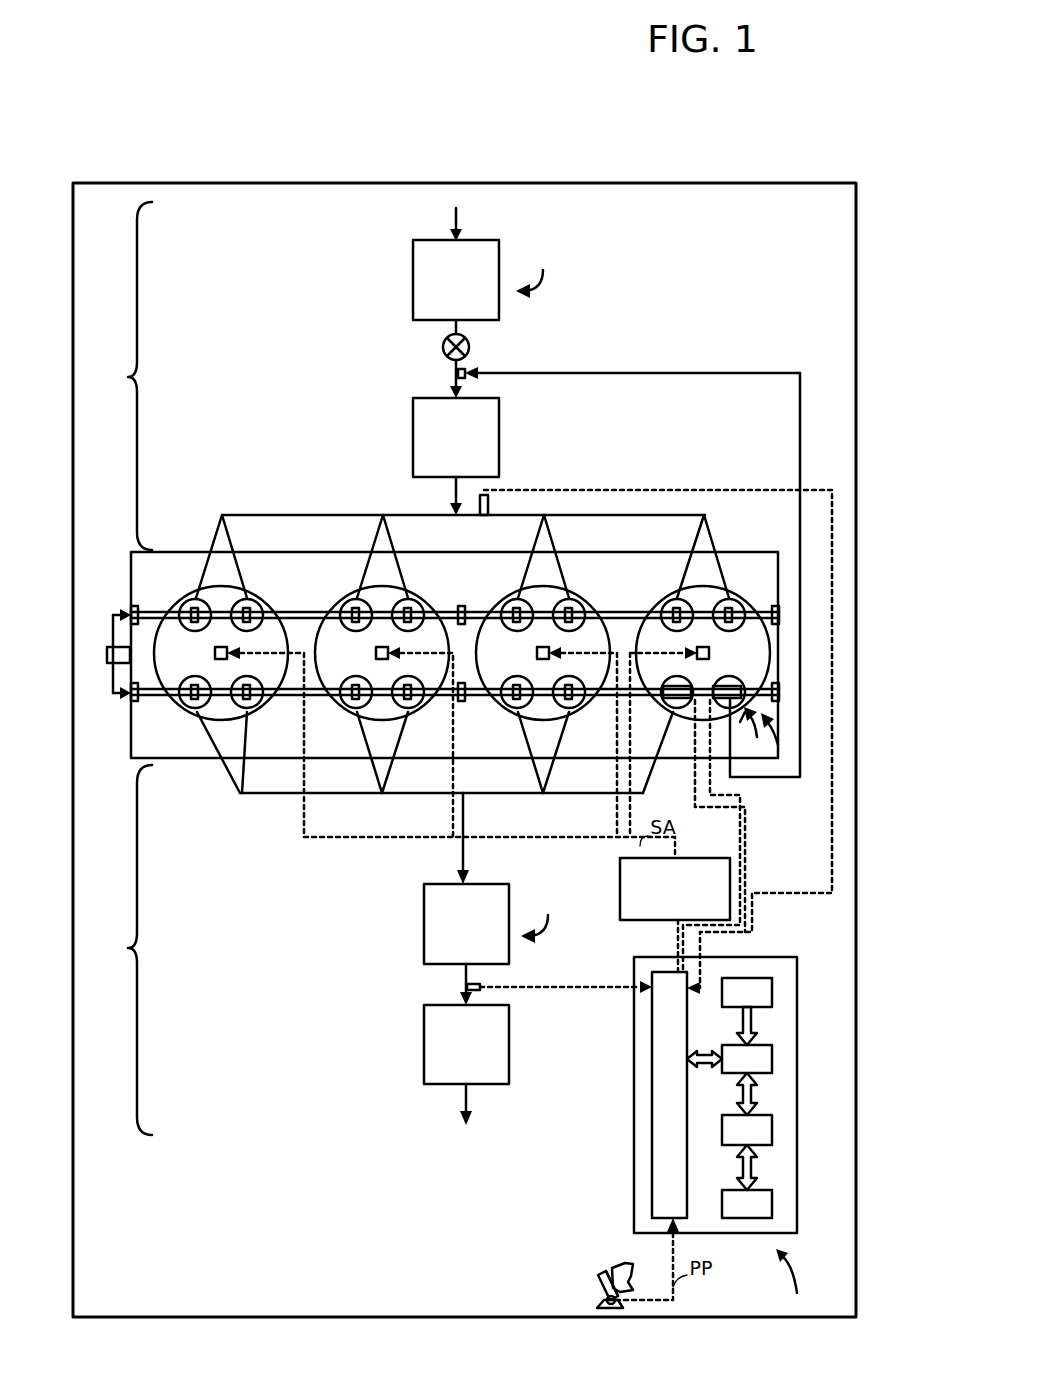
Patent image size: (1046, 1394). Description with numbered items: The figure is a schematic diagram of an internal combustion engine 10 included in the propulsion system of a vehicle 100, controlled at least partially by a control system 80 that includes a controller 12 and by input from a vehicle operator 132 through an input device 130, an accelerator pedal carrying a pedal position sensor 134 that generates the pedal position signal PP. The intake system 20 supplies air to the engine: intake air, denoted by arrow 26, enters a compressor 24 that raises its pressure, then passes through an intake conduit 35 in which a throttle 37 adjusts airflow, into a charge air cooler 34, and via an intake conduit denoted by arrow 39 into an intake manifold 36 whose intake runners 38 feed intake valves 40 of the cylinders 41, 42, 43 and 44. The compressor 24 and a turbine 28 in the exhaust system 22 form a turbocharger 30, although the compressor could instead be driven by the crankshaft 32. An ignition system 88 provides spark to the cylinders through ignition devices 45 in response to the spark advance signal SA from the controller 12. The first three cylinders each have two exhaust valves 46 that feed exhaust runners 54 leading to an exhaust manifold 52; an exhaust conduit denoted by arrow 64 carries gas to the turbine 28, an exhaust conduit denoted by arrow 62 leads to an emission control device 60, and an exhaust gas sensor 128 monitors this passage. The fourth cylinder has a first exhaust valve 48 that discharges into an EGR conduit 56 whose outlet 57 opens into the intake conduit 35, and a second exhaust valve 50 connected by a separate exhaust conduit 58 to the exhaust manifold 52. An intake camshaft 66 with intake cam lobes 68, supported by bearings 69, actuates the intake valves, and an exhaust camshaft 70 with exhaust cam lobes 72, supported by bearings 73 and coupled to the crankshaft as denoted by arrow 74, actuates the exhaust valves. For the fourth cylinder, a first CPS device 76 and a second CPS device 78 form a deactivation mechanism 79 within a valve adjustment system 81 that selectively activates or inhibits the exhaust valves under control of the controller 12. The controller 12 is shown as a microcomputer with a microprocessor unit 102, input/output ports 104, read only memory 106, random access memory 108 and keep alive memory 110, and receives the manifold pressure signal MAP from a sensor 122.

The vehicle 100 is at (83, 183).
The internal combustion engine 10 is at (441, 655).
The controller 12 is at (797, 957).
The intake system 20 is at (118, 376).
The exhaust system 22 is at (115, 950).
The compressor 24 is at (456, 280).
The arrow denoting flow of intake air 26 is at (452, 219).
The turbine 28 is at (466, 924).
The turbocharger 30 is at (535, 595).
The crankshaft 32 is at (112, 647).
The charge air cooler 34 is at (456, 437).
The intake conduit 35 is at (453, 366).
The intake manifold 36 is at (233, 515).
The throttle 37 is at (440, 346).
The intake runners 38 is at (215, 531).
The arrow denoting intake conduit 39 is at (452, 492).
The intake valves 40 is at (196, 599).
The cylinder 41 is at (238, 590).
The cylinder 42 is at (400, 590).
The cylinder 43 is at (561, 590).
The cylinder 44 is at (721, 590).
The ignition devices 45 is at (214, 653).
The exhaust valves 46 is at (192, 709).
The first exhaust valve 48 is at (741, 729).
The second exhaust valve 50 is at (668, 709).
The exhaust manifold 52 is at (270, 793).
The exhaust runners 54 is at (212, 743).
The EGR conduit 56 is at (800, 740).
The outlet 57 is at (468, 372).
The exhaust conduit 58 is at (662, 735).
The emission control device 60 is at (466, 1065).
The exhaust conduit 62 is at (113, 623).
The exhaust conduit 64 is at (466, 858).
The intake camshaft 66 is at (156, 611).
The intake cam lobes 68 is at (194, 630).
The bearings 69 is at (136, 606).
The exhaust camshaft 70 is at (158, 689).
The exhaust cam lobes 72 is at (193, 677).
The bearings 73 is at (136, 701).
The arrow denoting mechanical coupling 74 is at (113, 680).
The first CPS device 76 is at (733, 677).
The second CPS device 78 is at (673, 677).
The deactivation mechanism 79 is at (757, 734).
The control system 80 is at (791, 1282).
The valve adjustment system 81 is at (782, 737).
The ignition system 88 is at (620, 868).
The microprocessor unit 102 is at (772, 1058).
The input/output ports 104 is at (652, 975).
The read only memory 106 is at (772, 992).
The random access memory 108 is at (772, 1130).
The keep alive memory 110 is at (772, 1203).
The sensor 122 is at (490, 505).
The exhaust gas sensor 128 is at (478, 984).
The input device 130 is at (600, 1283).
The vehicle operator 132 is at (632, 1272).
The pedal position sensor 134 is at (607, 1300).